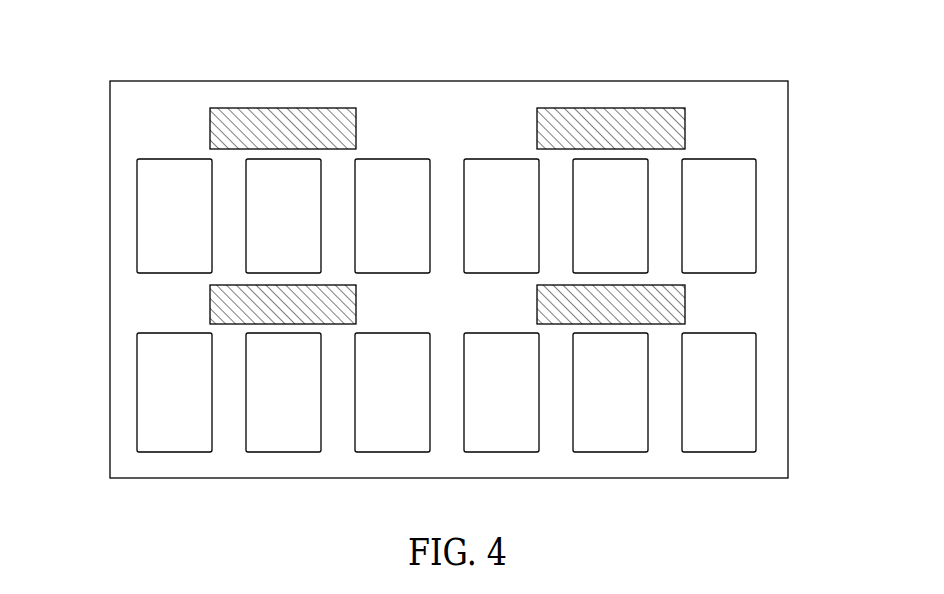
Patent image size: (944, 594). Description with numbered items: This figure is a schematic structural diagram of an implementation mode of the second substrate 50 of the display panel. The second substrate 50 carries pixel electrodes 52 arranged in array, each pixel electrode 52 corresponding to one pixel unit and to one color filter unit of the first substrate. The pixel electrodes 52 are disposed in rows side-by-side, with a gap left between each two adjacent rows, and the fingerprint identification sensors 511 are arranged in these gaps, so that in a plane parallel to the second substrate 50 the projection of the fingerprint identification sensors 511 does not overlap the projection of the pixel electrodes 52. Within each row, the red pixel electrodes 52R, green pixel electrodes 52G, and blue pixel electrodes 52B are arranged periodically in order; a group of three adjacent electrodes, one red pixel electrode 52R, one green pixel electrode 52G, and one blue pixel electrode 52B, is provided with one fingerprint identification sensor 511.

The second substrate 50 is at (777, 80).
The fingerprint identification sensor 511 is at (356, 119).
The pixel electrode 52 is at (154, 181).
The red pixel electrode 52R is at (338, 305).
The green pixel electrode 52G is at (447, 305).
The blue pixel electrode 52B is at (555, 305).